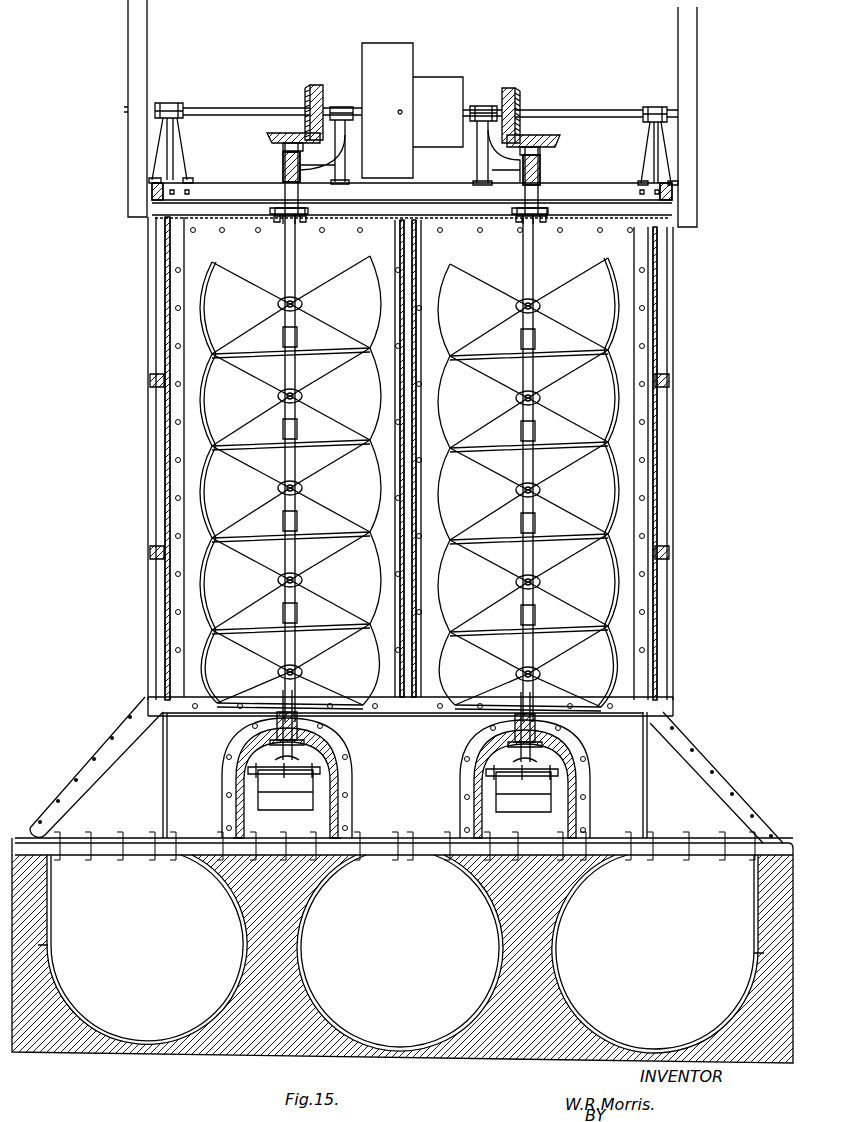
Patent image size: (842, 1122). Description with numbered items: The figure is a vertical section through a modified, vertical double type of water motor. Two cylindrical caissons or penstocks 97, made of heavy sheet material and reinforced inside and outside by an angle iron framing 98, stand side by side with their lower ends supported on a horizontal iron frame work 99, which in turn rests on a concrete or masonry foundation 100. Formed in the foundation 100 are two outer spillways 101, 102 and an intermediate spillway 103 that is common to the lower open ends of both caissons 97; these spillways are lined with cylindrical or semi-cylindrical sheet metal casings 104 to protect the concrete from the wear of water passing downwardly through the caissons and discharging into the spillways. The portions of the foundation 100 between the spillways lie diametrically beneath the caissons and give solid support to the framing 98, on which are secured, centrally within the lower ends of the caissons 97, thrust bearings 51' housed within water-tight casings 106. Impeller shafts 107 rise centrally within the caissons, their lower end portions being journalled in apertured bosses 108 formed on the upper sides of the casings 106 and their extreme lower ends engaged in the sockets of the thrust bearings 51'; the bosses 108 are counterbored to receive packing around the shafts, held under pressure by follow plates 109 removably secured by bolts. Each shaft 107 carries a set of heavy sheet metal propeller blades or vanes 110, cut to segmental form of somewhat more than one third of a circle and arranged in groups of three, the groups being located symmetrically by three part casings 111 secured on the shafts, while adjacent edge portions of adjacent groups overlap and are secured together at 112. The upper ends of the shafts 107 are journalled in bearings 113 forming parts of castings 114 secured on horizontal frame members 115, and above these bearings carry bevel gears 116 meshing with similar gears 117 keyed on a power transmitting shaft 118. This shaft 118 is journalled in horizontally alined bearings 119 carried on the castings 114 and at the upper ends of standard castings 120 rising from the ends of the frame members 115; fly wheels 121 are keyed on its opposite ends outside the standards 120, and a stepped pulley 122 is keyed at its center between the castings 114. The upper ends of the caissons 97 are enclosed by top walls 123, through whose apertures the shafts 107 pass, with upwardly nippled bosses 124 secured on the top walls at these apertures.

The fly wheel 121 is at (128, 73).
The power transmitting shaft 118 is at (222, 107).
The bearing 119 is at (168, 103).
The standard casting 120 is at (168, 162).
The casting 114 is at (480, 172).
The bevel gear 117 is at (312, 92).
The bevel gear 116 is at (277, 133).
The bearing 113 is at (283, 165).
The stepped pulley 122 is at (397, 52).
The horizontal frame member 115 is at (205, 190).
The nippled boss 124 is at (283, 220).
The top wall 123 is at (488, 228).
The cylindrical caisson or penstock 97 is at (165, 497).
The angle iron framing 98 is at (175, 415).
The impeller shaft 107 is at (289, 262).
The propeller blade or vane 110 is at (336, 290).
The overlapping edge portion 112 is at (342, 356).
The three part casing 111 is at (524, 348).
The horizontal iron frame work 99 is at (72, 787).
The follow plate 109 is at (225, 750).
The apertured boss 108 is at (336, 739).
The thrust bearing 51' is at (369, 787).
The water-tight casing 106 is at (343, 781).
The concrete or masonry foundation 100 is at (235, 1050).
The outer spillway 101 is at (147, 949).
The intermediate spillway 103 is at (400, 953).
The outer spillway 102 is at (655, 954).
The casing 104 is at (140, 1050).